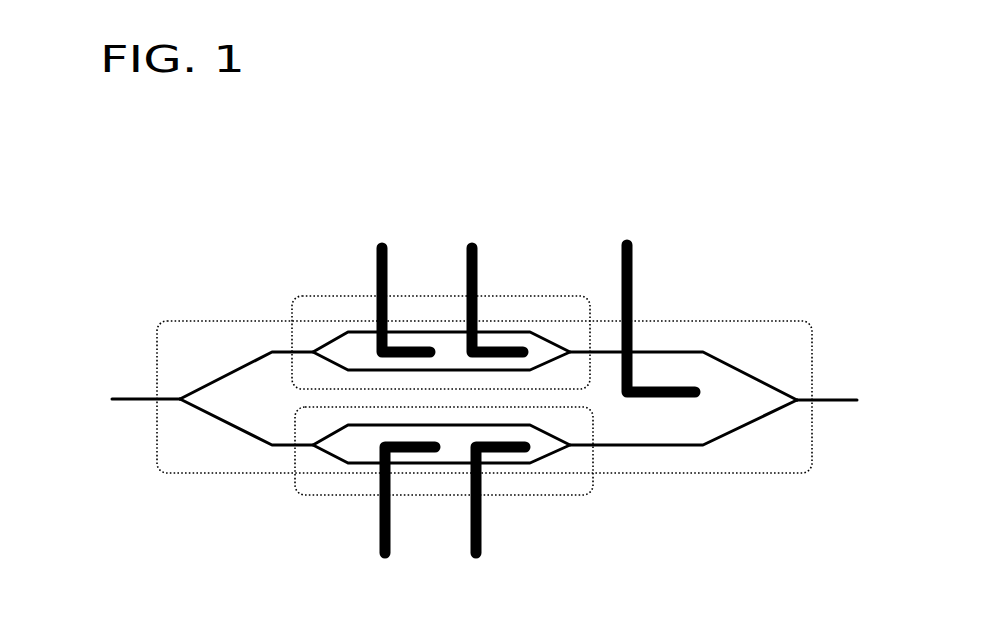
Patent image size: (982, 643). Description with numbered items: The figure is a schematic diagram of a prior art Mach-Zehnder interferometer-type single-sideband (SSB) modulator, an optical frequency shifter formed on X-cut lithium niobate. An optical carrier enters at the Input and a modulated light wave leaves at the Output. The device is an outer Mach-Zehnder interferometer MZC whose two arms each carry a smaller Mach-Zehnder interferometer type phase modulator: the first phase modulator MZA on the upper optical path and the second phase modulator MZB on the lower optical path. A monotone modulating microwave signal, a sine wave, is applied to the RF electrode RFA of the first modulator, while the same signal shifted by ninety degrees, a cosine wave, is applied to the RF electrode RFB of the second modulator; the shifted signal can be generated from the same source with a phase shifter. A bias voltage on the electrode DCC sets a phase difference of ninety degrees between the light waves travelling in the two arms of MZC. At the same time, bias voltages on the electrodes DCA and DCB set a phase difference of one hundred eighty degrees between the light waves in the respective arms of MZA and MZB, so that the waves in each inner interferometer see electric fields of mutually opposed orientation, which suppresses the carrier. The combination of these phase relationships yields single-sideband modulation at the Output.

The first Mach-Zehnder interferometer type phase modulator MZA is at (318, 297).
The second Mach-Zehnder interferometer type phase modulator MZB is at (307, 495).
The Mach-Zehnder interferometer type SSB modulator MZC is at (642, 473).
The RF electrode of MZA RFA is at (387, 257).
The DC bias electrode of MZA DCA is at (494, 257).
The RF electrode of MZB RFB is at (389, 530).
The DC bias electrode of MZB DCB is at (503, 530).
The DC bias electrode of MZC DCC is at (651, 278).
The optical carrier input Input is at (107, 378).
The modulated light wave output Output is at (857, 379).